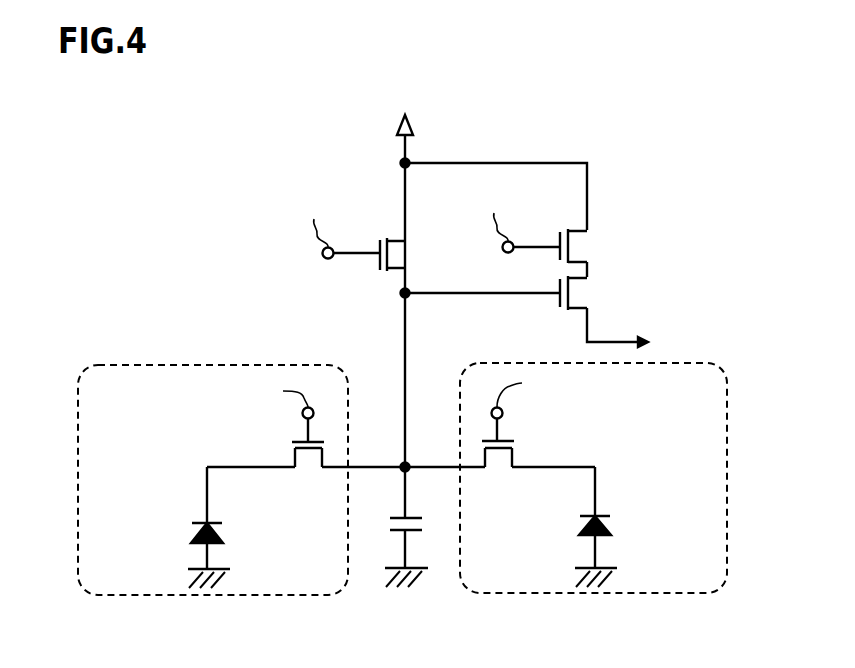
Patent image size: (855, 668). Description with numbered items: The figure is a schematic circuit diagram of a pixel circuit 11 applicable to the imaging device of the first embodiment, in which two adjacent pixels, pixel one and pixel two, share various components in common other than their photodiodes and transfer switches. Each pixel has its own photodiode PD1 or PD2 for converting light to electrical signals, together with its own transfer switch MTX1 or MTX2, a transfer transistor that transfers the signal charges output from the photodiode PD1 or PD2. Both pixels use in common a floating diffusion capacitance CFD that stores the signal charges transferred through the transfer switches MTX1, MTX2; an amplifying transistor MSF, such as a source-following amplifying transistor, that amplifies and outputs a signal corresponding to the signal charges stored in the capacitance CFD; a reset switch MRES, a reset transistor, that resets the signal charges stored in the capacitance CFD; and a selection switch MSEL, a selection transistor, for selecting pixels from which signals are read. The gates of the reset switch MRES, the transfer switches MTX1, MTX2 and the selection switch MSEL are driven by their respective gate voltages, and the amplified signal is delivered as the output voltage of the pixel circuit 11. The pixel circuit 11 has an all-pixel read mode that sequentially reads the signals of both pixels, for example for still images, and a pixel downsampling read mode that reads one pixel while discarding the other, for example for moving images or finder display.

The pixel circuit 11 is at (538, 86).
The reset switch MRES is at (390, 245).
The selection switch MSEL is at (573, 238).
The amplifying transistor MSF is at (599, 293).
The transfer switch MTX1 is at (304, 446).
The transfer switch MTX2 is at (496, 441).
The photodiode PD1 is at (184, 527).
The photodiode PD2 is at (572, 527).
The floating diffusion capacitance CFD is at (391, 527).